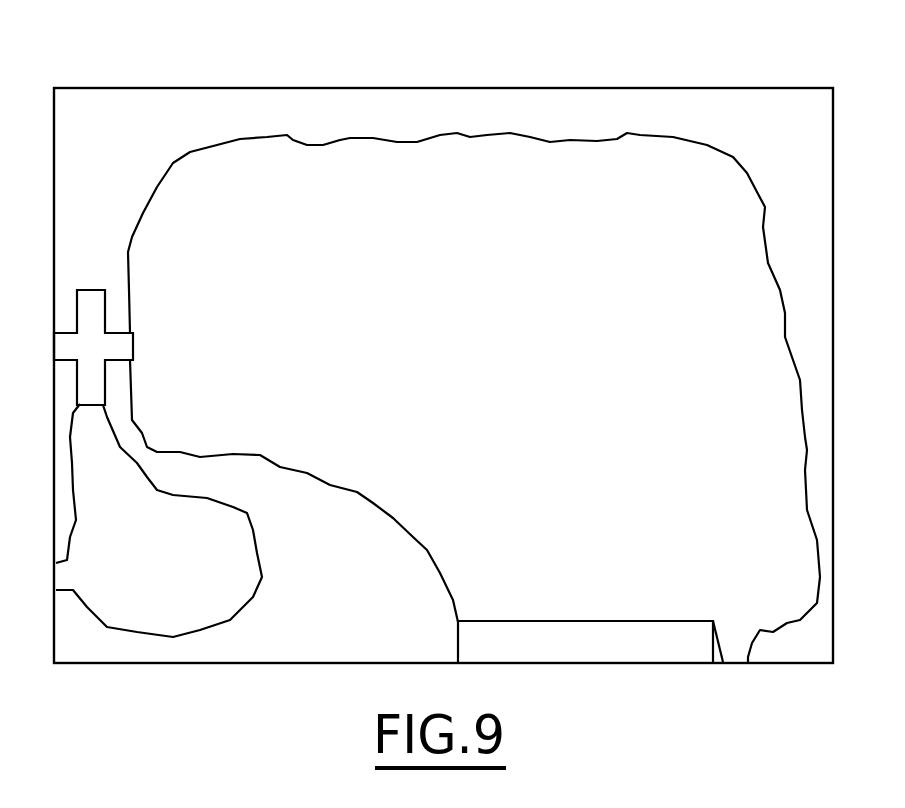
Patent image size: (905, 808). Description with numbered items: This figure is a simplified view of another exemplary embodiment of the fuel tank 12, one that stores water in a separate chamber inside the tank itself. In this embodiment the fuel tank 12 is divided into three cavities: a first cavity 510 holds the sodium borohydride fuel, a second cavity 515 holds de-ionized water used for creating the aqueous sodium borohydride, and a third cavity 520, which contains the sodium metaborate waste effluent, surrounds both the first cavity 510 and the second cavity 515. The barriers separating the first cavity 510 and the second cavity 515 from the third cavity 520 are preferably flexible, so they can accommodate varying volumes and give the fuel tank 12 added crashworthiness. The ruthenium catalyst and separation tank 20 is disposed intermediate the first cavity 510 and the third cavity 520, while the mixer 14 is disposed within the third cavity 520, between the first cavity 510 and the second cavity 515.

The fuel tank 12 is at (732, 62).
The mixer 14 is at (107, 322).
The ruthenium catalyst and separation tank 20 is at (558, 637).
The first cavity 510 is at (668, 457).
The second cavity 515 is at (197, 578).
The third cavity 520 is at (368, 603).